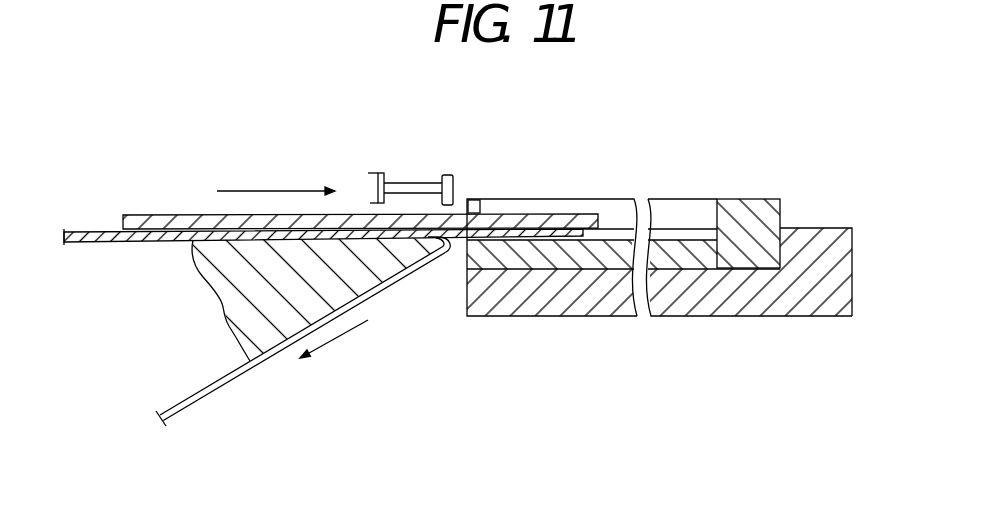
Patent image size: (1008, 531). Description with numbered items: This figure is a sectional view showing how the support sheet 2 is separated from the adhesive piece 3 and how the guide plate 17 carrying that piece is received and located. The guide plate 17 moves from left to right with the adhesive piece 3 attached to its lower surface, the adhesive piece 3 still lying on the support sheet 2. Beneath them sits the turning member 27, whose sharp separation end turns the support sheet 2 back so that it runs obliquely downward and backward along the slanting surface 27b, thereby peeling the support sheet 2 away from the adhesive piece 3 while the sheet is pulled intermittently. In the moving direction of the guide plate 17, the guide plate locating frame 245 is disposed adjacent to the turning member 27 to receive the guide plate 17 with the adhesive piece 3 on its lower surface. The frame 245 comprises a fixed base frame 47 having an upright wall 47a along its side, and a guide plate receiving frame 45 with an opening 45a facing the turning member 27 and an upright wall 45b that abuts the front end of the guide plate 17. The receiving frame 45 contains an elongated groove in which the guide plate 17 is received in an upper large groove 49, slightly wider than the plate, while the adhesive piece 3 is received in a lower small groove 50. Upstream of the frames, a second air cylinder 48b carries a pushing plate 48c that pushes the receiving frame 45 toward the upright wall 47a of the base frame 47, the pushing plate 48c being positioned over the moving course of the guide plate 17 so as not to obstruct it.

The support sheet 2 is at (192, 398).
The adhesive piece 3 is at (168, 218).
The guide plate 17 is at (365, 213).
The turning member 27 is at (368, 290).
The slanting surface 27b is at (290, 352).
The guide plate receiving frame 45 is at (681, 190).
The opening 45a is at (480, 205).
The upright wall 45b is at (748, 200).
The fixed base frame 47 is at (527, 316).
The upright wall 47a is at (843, 250).
The second air cylinder 48b is at (372, 173).
The pushing plate 48c is at (447, 173).
The upper large groove 49 is at (605, 205).
The lower small groove 50 is at (688, 235).
The guide plate locating frame 245 is at (821, 182).